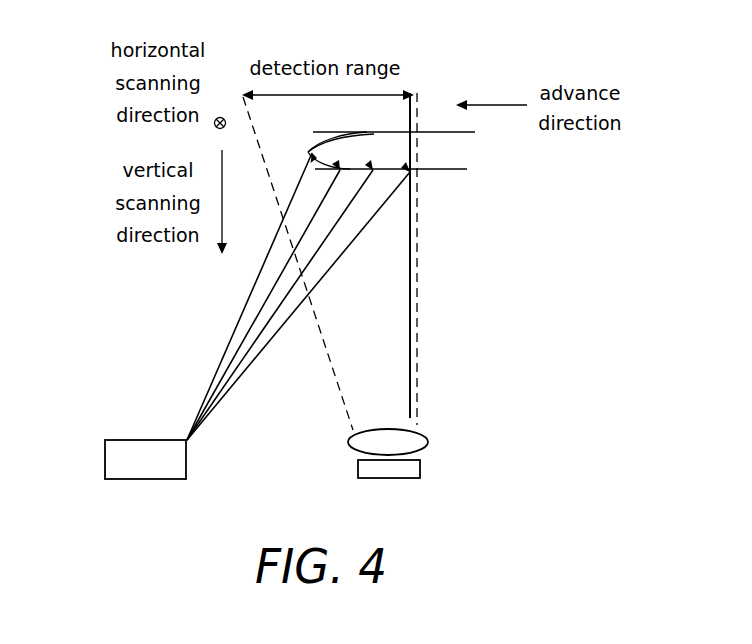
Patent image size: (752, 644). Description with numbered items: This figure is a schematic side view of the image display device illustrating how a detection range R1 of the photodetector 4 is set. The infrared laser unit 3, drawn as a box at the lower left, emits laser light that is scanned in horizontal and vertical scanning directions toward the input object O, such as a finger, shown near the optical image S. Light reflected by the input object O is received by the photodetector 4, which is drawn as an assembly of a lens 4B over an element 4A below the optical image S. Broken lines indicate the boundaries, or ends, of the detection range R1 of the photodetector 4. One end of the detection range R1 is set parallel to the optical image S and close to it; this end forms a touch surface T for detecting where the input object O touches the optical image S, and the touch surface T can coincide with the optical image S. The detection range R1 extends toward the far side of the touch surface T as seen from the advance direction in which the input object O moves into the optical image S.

The infrared laser unit 3 is at (105, 458).
The photodetector 4 is at (487, 430).
The light receiving element 4A is at (420, 468).
The light receiving lens 4B is at (428, 442).
The input object O is at (467, 165).
The touch surface T is at (418, 204).
The optical image S is at (410, 277).
The detection range R1 is at (333, 377).